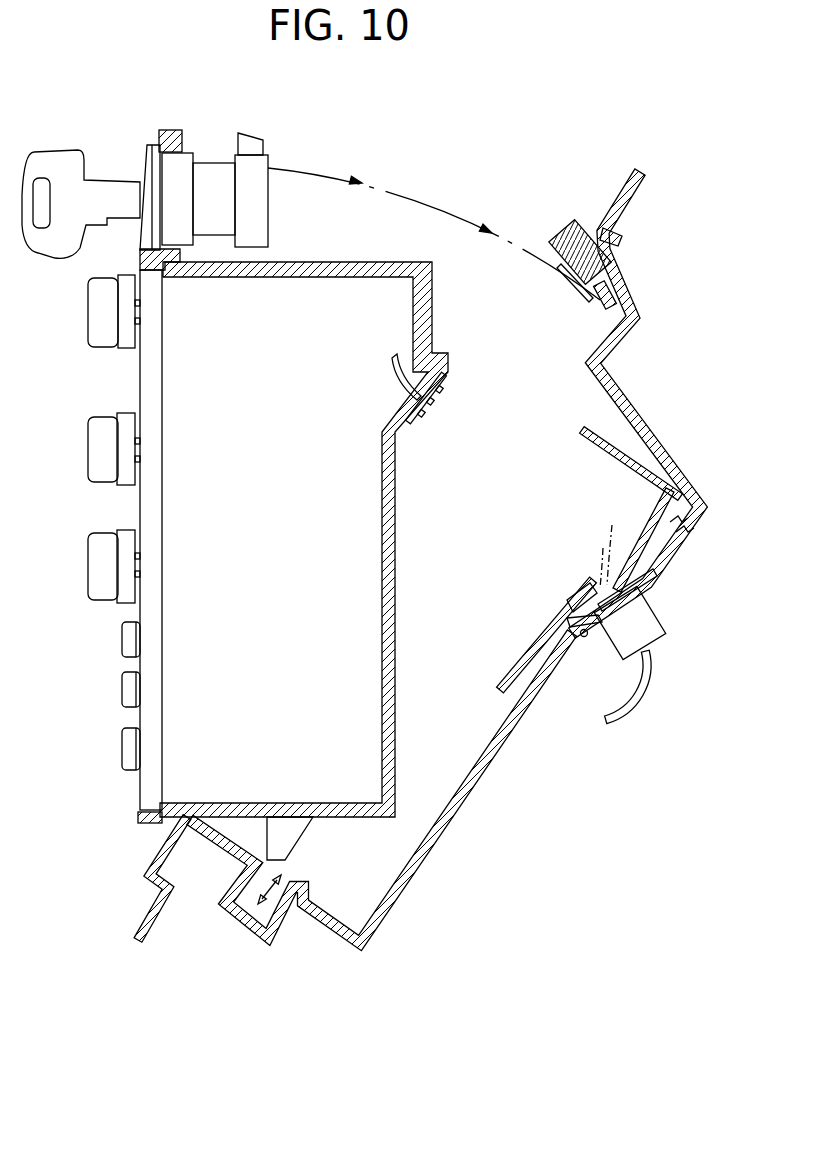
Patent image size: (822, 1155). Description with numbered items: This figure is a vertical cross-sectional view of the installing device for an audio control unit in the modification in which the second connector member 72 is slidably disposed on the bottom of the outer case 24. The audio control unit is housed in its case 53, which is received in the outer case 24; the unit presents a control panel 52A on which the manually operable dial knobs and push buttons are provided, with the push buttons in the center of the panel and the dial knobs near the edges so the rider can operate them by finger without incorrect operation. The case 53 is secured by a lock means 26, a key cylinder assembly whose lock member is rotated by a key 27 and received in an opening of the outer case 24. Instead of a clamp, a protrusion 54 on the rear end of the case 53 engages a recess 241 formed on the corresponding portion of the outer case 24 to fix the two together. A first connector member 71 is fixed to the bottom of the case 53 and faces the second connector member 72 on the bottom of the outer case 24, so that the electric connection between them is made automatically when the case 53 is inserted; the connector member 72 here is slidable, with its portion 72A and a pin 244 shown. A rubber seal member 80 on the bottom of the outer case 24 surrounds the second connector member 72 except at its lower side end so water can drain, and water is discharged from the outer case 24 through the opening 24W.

The key 27 is at (63, 162).
The lock means 26 is at (185, 162).
The case 53 is at (345, 272).
The control panel 52A is at (140, 506).
The first connector member 71 is at (420, 412).
The protrusion 54 is at (290, 838).
The outer case 24 is at (648, 422).
The opening 24W is at (365, 948).
The recess 241 is at (267, 937).
The seal member 80 is at (693, 505).
The lever plate 72A is at (575, 598).
The second connector member 72 is at (655, 622).
The pin 244 is at (587, 638).